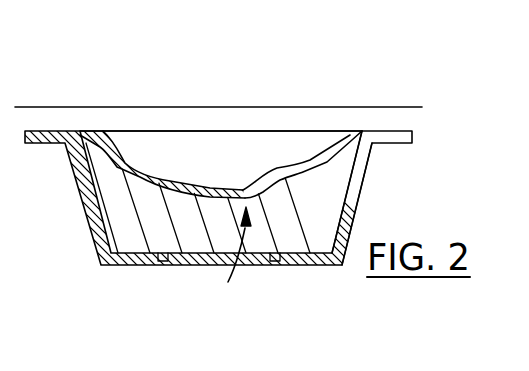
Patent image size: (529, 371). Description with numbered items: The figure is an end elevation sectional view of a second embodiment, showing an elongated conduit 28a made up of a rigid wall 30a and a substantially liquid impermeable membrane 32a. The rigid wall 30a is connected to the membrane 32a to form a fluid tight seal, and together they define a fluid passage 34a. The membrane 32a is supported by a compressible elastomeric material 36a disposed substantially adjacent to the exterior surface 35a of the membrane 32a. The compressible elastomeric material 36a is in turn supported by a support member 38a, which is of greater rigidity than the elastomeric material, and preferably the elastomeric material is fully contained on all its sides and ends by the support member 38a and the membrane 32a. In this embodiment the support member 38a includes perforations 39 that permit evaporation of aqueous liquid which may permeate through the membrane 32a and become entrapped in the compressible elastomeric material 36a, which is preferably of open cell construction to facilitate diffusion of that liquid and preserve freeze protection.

The elongated conduit 28a is at (392, 88).
The rigid wall 30a is at (297, 120).
The membrane 32a is at (113, 143).
The fluid passage 34a is at (215, 150).
The exterior surface of membrane 35a is at (226, 259).
The compressible elastomeric material 36a is at (117, 231).
The support member 38a is at (360, 198).
The perforations 39 is at (164, 262).